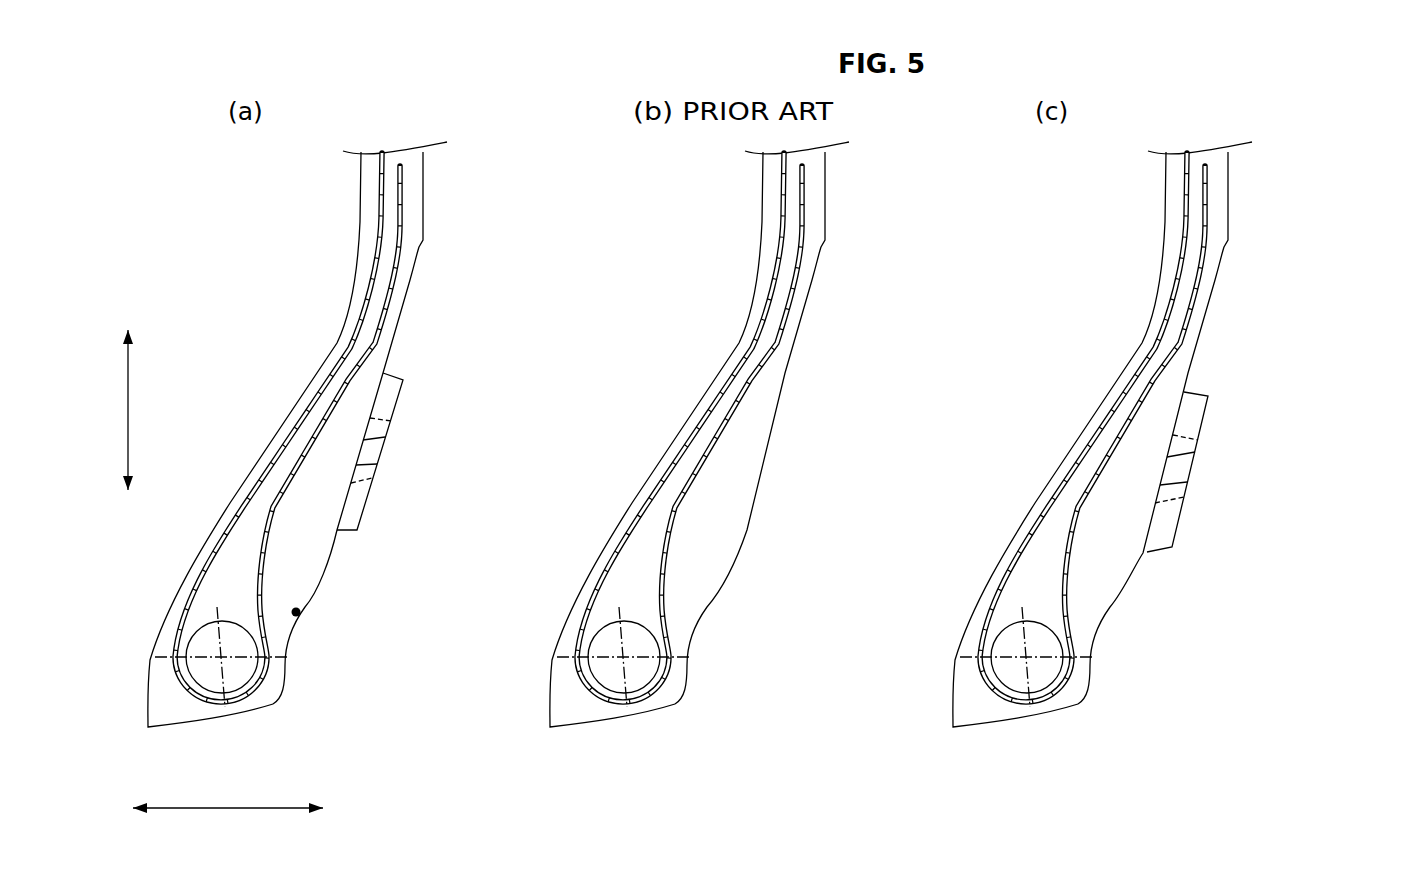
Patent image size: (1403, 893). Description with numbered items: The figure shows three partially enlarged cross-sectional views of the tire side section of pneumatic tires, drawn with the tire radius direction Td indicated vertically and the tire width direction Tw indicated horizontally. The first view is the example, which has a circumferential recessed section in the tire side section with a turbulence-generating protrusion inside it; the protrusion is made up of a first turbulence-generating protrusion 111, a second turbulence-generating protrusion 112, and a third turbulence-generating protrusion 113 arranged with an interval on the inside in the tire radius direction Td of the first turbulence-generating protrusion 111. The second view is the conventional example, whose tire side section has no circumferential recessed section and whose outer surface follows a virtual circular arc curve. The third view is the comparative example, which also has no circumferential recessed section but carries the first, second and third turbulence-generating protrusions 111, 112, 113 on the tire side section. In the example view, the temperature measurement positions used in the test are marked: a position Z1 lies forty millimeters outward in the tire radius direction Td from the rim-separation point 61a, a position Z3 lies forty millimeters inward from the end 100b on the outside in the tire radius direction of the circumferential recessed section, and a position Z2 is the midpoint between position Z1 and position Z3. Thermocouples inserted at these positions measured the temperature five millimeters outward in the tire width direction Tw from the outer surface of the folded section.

The end on the outside in the tire radius direction of the circumferential recessed 100b is at (423, 241).
The rim-separation point 61a is at (300, 615).
The first turbulence-generating protrusion 111 is at (388, 398).
The second turbulence-generating protrusion 112 is at (367, 455).
The third turbulence-generating protrusion 113 is at (347, 510).
The position Z1 is at (265, 543).
The position Z2 is at (330, 413).
The position Z3 is at (396, 277).
The tire radius direction Td is at (115, 410).
The tire width direction Tw is at (228, 798).